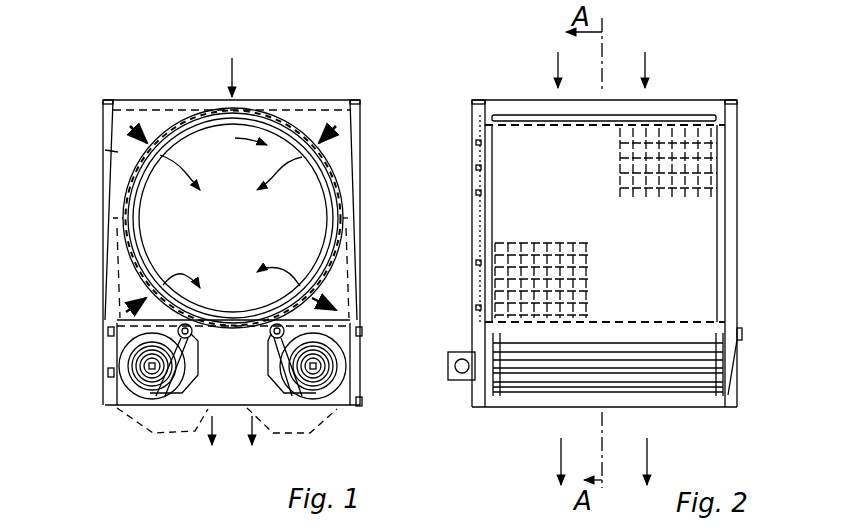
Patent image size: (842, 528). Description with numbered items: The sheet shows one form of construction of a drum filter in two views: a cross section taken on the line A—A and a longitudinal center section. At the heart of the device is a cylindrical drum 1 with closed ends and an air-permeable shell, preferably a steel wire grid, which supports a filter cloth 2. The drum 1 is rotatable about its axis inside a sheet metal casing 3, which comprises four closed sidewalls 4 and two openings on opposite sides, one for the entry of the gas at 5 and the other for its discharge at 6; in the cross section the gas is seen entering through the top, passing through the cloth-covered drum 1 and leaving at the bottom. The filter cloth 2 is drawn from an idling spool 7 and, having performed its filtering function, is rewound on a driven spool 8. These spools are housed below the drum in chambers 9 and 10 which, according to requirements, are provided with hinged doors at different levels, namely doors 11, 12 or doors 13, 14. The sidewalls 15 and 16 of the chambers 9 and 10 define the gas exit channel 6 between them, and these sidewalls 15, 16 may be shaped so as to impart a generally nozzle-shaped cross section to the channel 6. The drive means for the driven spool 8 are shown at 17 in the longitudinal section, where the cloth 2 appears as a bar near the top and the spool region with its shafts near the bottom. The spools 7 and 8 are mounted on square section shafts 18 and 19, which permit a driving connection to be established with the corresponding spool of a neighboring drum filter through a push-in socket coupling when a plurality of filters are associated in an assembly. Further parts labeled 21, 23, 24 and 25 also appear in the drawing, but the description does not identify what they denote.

In FIG. 1, the cylindrical drum 1 is at (272, 142).
In FIG. 2, the cylindrical drum 1 is at (700, 163).
In FIG. 1, the filter cloth 2 is at (162, 392).
In FIG. 2, the filter cloth 2 is at (510, 115).
In FIG. 1, the casing 3 is at (105, 151).
In FIG. 1, the sidewalls 4 is at (355, 140).
In FIG. 1, the gas entry opening 5 is at (180, 100).
In FIG. 1, the gas exit channel 6 is at (232, 405).
In FIG. 1, the idling spool 7 is at (124, 382).
In FIG. 1, the driven spool 8 is at (330, 378).
In FIG. 1, the chamber 9 is at (122, 407).
In FIG. 1, the chamber 10 is at (355, 342).
In FIG. 1, the hinged door 11 is at (107, 340).
In FIG. 1, the hinged door 12 is at (382, 366).
In FIG. 1, the hinged door 13 is at (152, 436).
In FIG. 1, the hinged door 14 is at (337, 424).
In FIG. 1, the chamber sidewall 15 is at (195, 363).
In FIG. 1, the chamber sidewall 16 is at (272, 363).
In FIG. 2, the drive means 17 is at (460, 357).
In FIG. 1, the square section shaft 18 is at (152, 368).
In FIG. 2, the square section shaft 19 is at (508, 372).
In FIG. 1, the left bracket 21 is at (87, 328).
In FIG. 1, the left pivot 23 is at (190, 328).
In FIG. 1, the right pivot 24 is at (275, 326).
In FIG. 1, the right bracket 25 is at (363, 335).
In FIG. 2, the right bracket 25 is at (741, 353).